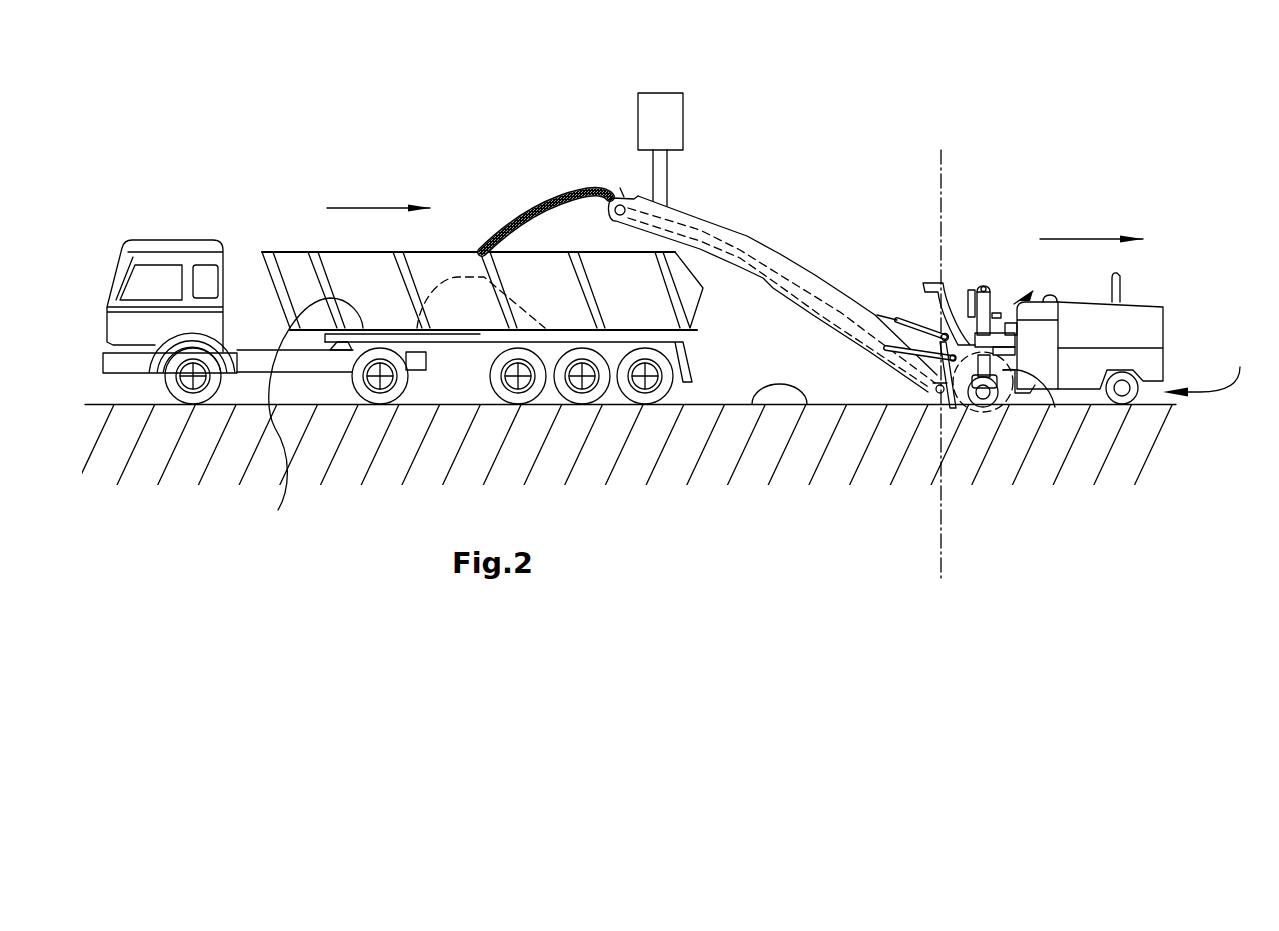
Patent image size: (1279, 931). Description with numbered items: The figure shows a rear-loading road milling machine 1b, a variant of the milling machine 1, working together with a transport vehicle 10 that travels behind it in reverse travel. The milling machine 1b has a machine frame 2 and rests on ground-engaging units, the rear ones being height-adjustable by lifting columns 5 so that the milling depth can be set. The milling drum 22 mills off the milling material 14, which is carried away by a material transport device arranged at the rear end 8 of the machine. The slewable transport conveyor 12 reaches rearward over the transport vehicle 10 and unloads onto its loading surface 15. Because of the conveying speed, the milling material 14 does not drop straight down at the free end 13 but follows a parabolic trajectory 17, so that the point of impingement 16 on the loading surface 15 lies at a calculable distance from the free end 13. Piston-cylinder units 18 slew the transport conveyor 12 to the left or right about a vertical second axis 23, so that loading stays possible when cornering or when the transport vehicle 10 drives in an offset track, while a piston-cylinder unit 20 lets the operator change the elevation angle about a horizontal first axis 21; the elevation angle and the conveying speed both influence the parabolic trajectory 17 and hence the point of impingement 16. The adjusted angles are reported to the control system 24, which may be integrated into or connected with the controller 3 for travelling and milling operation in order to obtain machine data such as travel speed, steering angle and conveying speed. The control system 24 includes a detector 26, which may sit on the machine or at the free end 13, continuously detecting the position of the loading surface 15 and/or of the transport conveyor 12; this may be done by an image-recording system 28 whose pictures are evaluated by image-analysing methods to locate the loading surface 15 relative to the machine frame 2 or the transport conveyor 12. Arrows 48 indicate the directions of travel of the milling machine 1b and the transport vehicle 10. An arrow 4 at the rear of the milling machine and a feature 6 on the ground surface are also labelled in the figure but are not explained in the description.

The milling machine 1 is at (1044, 355).
The rear-loading milling machine 1b is at (1120, 339).
The machine frame 2 is at (1113, 285).
The controller 3 is at (1056, 250).
The direction of travel of the milling machine 4 is at (1209, 371).
The lifting columns 5 is at (1042, 385).
The ground surface irregularity 6 is at (807, 404).
The rear end 8 is at (1005, 355).
The transport vehicle 10 is at (403, 331).
The transport conveyor 12 is at (739, 211).
The free end of the transport conveyor 13 is at (612, 176).
The milling material 14 is at (492, 320).
The loading surface 15 is at (312, 420).
The point of impingement 16 is at (458, 328).
The parabolic trajectory 17 is at (533, 207).
The piston-cylinder units 18 is at (937, 372).
The piston-cylinder unit 20 is at (900, 323).
The horizontal first axis 21 is at (940, 391).
The milling drum 22 is at (1022, 398).
The vertical second axis 23 is at (941, 537).
The control system 24 is at (1008, 323).
The detector 26 is at (698, 90).
The image-recording system 28 is at (667, 110).
The arrows 48 is at (367, 208).